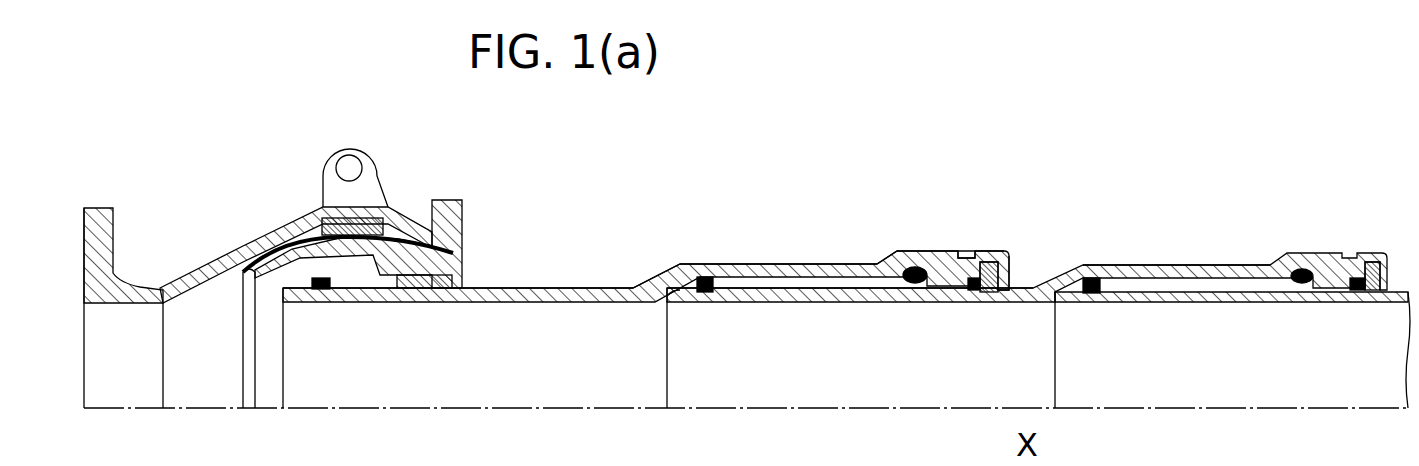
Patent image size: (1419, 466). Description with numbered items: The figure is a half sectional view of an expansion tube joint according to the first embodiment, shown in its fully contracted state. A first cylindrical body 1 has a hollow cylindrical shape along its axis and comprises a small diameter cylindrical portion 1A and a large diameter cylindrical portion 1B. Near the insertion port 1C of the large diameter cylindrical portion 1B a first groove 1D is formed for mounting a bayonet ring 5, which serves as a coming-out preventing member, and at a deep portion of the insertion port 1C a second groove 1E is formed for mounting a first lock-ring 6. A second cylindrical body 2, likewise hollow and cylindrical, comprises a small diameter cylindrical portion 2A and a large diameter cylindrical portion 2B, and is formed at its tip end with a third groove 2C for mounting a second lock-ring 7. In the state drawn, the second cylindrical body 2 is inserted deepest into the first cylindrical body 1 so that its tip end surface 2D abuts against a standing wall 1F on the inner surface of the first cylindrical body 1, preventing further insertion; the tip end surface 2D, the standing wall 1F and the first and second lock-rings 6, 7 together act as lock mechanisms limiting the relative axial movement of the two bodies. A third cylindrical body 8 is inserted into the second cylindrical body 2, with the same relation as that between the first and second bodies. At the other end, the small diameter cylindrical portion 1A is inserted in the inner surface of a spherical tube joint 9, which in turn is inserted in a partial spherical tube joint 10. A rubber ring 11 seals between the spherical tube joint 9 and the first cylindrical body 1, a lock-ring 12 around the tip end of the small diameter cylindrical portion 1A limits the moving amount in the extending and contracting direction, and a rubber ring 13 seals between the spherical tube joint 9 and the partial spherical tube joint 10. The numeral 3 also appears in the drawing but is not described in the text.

The first cylindrical body 1 is at (617, 276).
The small diameter cylindrical portion 1A is at (527, 288).
The large diameter cylindrical portion 1B is at (790, 264).
The insertion port 1C is at (1024, 262).
The first groove 1D is at (997, 253).
The second groove 1E is at (918, 268).
The standing wall 1F is at (628, 302).
The second cylindrical body 2 is at (1134, 250).
The small diameter cylindrical portion 2A is at (790, 304).
The large diameter cylindrical portion 2B is at (1226, 265).
The third groove 2C is at (704, 302).
The tip end surface 2D is at (667, 300).
The groove 3 is at (952, 252).
The bayonet ring 5 is at (993, 296).
The first lock-ring 6 is at (912, 286).
The second lock-ring 7 is at (701, 277).
The third cylindrical body 8 is at (1343, 303).
The spherical tube joint 9 is at (400, 242).
The partial spherical tube joint 10 is at (263, 244).
The rubber ring 11 is at (427, 290).
The lock-ring 12 is at (320, 290).
The rubber ring 13 is at (388, 235).